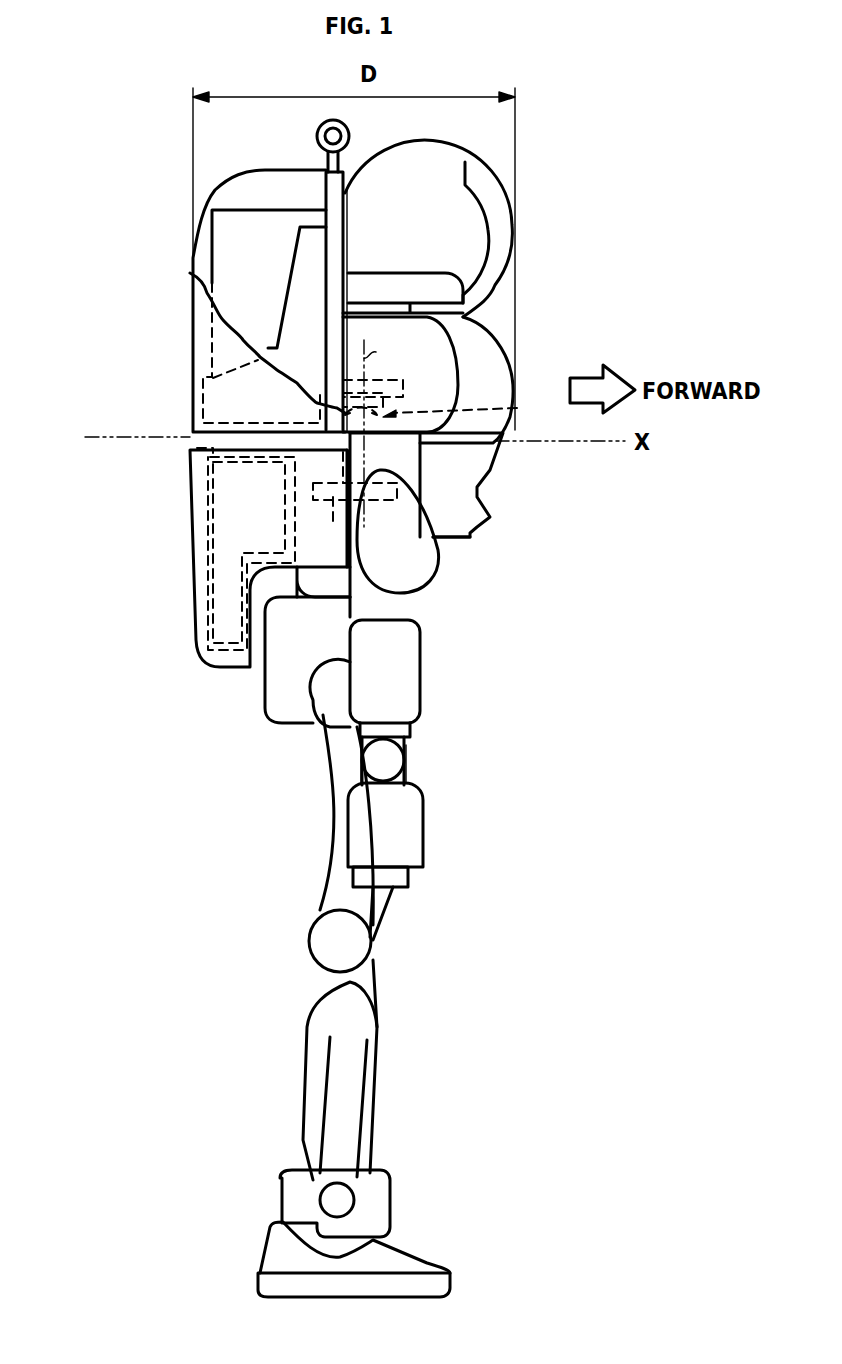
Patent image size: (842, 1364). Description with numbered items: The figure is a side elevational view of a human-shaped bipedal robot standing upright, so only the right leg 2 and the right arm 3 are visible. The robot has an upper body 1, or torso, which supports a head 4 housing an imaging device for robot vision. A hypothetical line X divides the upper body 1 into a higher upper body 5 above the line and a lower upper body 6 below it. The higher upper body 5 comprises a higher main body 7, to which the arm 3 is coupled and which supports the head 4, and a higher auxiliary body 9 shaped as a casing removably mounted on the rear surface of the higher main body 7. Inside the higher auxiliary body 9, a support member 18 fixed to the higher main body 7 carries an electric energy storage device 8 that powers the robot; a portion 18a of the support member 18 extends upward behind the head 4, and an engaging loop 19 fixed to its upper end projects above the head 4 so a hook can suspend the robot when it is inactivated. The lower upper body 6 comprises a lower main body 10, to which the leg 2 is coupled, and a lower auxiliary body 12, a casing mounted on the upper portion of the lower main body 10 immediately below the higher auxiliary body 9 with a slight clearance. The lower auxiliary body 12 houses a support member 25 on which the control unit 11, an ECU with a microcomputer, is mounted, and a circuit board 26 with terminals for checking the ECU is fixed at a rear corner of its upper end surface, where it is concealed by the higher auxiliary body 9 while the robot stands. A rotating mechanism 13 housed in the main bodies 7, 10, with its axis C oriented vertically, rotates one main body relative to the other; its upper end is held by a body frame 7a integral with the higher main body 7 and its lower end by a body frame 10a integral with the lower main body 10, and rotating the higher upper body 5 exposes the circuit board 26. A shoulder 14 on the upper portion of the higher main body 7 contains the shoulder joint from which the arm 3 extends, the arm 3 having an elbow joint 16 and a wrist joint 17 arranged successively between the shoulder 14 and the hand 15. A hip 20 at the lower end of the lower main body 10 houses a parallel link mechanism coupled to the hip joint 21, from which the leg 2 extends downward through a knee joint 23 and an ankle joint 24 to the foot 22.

The upper body 1 is at (527, 513).
The leg 2 is at (387, 1013).
The arm 3 is at (445, 592).
The head 4 is at (476, 160).
The higher upper body 5 is at (531, 360).
The lower upper body 6 is at (477, 538).
The higher main body 7 is at (493, 327).
The body frame 7a is at (380, 373).
The electric energy storage device 8 is at (237, 243).
The higher auxiliary body 9 is at (263, 170).
The lower main body 10 is at (490, 472).
The body frame 10a is at (352, 520).
The control unit (ECU) 11 is at (207, 537).
The lower auxiliary body 12 is at (190, 602).
The rotating mechanism 13 is at (447, 429).
The shoulder 14 is at (423, 337).
The hand 15 is at (397, 878).
The thigh link 16 is at (423, 625).
The wrist joint 17 is at (407, 768).
The support member 18 is at (300, 320).
The portion of support member 18a is at (330, 283).
The engaging loop 19 is at (350, 136).
The hip 20 is at (293, 673).
The hip joint 21 is at (310, 710).
The foot 22 is at (407, 1283).
The knee joint 23 is at (383, 937).
The ankle joint 24 is at (367, 1195).
The support member 25 is at (287, 503).
The circuit board 26 is at (193, 443).